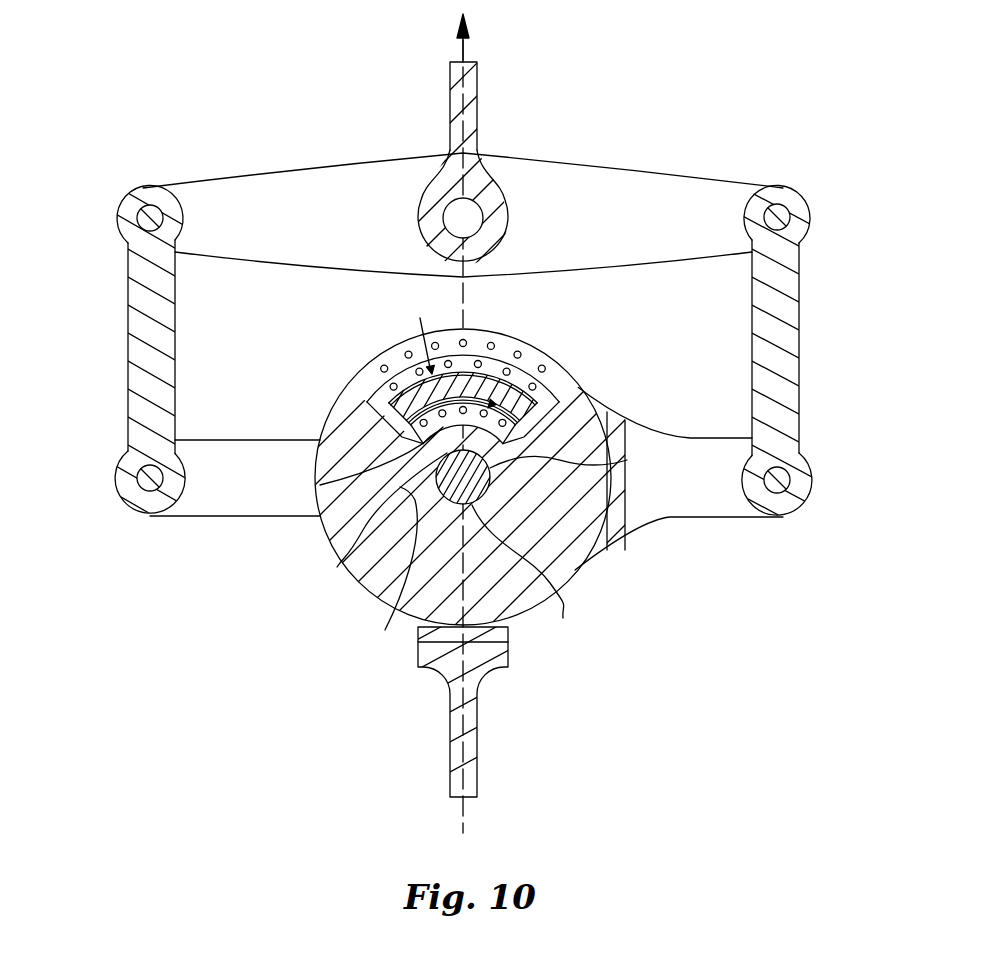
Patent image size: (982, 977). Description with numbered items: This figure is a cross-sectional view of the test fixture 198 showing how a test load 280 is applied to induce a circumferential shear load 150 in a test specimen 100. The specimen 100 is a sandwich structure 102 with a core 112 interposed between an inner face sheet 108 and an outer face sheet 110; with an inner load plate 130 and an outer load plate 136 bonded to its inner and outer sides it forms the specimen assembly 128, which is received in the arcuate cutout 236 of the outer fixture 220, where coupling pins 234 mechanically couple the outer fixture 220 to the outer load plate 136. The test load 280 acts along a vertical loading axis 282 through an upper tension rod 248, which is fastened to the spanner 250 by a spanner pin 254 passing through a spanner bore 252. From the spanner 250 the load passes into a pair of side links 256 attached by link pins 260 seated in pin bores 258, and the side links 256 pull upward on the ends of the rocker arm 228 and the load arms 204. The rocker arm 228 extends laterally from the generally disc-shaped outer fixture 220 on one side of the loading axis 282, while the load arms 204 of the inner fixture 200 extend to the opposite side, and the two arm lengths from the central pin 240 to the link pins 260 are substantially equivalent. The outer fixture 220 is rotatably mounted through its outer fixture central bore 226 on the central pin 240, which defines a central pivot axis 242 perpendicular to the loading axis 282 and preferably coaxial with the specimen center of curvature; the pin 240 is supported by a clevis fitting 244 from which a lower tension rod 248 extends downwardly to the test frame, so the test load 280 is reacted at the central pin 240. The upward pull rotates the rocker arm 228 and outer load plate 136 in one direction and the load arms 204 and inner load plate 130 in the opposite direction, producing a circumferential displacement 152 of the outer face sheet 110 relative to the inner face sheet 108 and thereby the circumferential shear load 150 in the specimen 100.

The test specimen 100 is at (460, 395).
The sandwich structure 102 is at (372, 418).
The inner face sheet 108 is at (556, 404).
The outer face sheet 110 is at (608, 422).
The core 112 is at (390, 445).
The specimen assembly 128 is at (395, 405).
The inner load plate 130 is at (392, 382).
The outer load plate 136 is at (548, 400).
The circumferential shear load 150 is at (418, 331).
The circumferential displacement 152 is at (417, 370).
The test fixture 198 is at (463, 192).
The inner fixture 200 is at (454, 517).
The load arm 204 is at (188, 519).
The outer fixture 220 is at (460, 500).
The outer fixture central bore 226 is at (628, 461).
The rocker arm 228 is at (670, 519).
The coupling pin 234 is at (490, 406).
The cutout 236 is at (388, 368).
The central pin 240 is at (345, 560).
The central pivot axis 242 is at (386, 625).
The clevis fitting 244 is at (508, 660).
The tension rod 248 is at (469, 419).
The spanner 250 is at (368, 163).
The spanner bore 252 is at (495, 179).
The spanner pin 254 is at (485, 224).
The side link 256 is at (465, 351).
The pin bore 258 is at (466, 340).
The link pin 260 is at (148, 218).
The test load 280 is at (468, 38).
The loading axis 282 is at (450, 72).